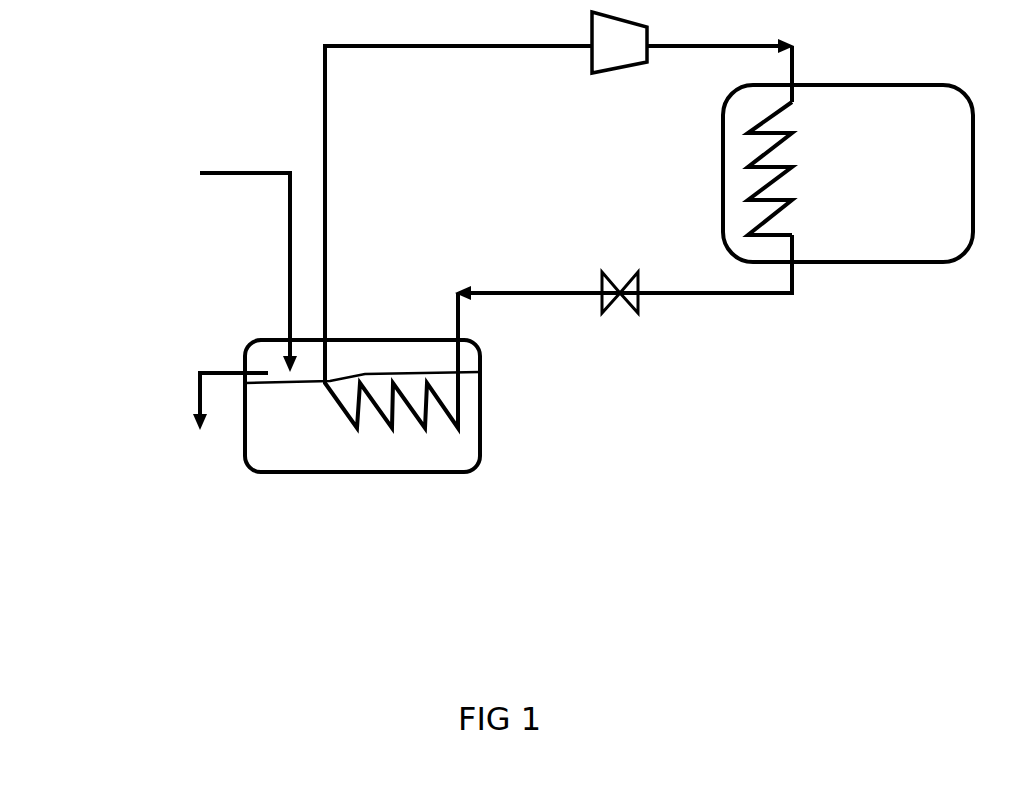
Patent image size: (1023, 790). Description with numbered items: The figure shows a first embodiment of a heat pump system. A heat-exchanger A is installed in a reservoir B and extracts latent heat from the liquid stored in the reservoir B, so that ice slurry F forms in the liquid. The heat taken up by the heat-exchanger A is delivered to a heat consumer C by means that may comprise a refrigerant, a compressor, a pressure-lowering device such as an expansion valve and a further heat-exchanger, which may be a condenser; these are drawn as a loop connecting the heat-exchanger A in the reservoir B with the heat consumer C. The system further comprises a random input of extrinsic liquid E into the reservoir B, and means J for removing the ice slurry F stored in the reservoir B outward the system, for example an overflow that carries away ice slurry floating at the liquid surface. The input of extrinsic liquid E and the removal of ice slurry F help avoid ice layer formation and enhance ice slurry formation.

The heat-exchanger A is at (391, 378).
The reservoir B is at (362, 436).
The heat consumer C is at (848, 173).
The extrinsic liquid E is at (229, 266).
The ice slurry F is at (362, 397).
The means for removing ice slurry J is at (230, 420).